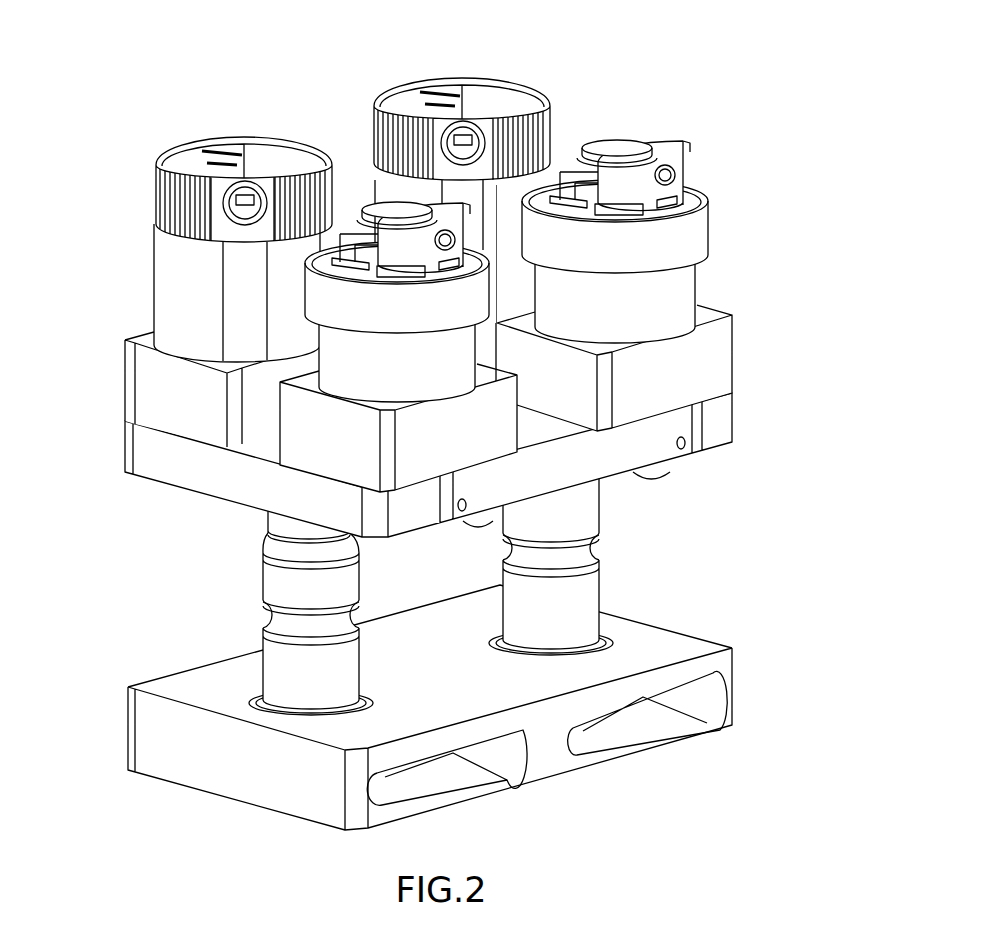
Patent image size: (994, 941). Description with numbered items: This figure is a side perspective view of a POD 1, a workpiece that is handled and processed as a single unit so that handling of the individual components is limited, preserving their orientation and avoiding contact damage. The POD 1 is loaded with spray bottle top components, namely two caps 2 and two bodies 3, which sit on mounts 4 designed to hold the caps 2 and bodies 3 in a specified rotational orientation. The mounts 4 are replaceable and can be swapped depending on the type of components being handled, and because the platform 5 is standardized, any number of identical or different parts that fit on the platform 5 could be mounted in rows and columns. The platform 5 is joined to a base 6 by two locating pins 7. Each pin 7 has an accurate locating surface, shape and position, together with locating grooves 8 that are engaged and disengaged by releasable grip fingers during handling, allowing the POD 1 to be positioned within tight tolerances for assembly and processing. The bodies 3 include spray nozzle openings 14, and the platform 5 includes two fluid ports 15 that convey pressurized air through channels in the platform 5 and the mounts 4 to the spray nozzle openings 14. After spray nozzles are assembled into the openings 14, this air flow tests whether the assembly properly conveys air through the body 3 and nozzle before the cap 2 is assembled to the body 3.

The POD 1 is at (714, 597).
The cap 2 is at (477, 80).
The body 3 is at (320, 298).
The mount 4 is at (360, 367).
The platform 5 is at (733, 423).
The base 6 is at (733, 683).
The locating pin 7 is at (592, 513).
The locating groove 8 is at (562, 557).
The spray nozzle opening 14 is at (455, 238).
The fluid port 15 is at (567, 795).